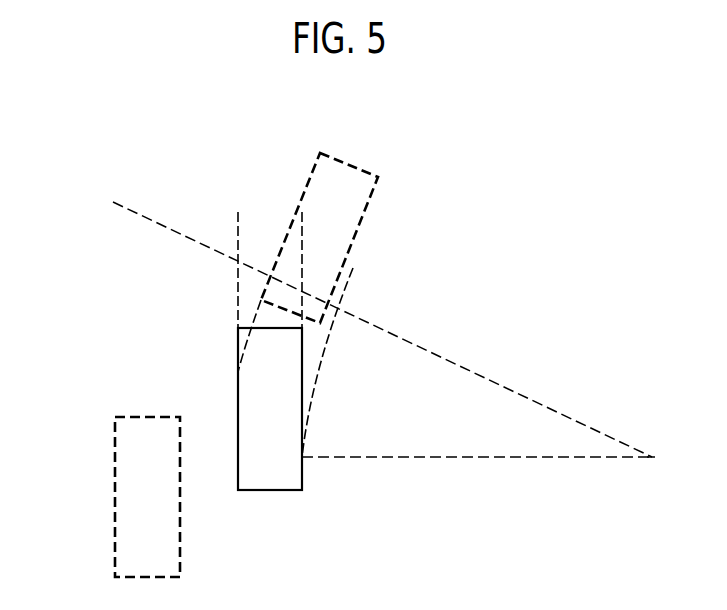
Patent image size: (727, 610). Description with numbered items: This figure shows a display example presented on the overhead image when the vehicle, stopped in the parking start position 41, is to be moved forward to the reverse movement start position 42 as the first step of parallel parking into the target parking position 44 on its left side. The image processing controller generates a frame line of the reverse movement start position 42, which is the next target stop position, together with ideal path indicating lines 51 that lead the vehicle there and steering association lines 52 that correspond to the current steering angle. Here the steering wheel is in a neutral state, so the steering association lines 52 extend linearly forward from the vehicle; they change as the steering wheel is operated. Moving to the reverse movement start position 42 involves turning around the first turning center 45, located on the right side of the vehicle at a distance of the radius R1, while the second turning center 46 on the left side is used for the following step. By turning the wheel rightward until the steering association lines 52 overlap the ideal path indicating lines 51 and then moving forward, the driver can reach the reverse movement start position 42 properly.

The parking start position 41 is at (262, 480).
The reverse movement start position 42 is at (375, 173).
The target parking position 44 is at (127, 487).
The first turning center 45 is at (653, 457).
The second turning center 46 is at (113, 202).
The ideal path indicating lines 51 is at (247, 362).
The steering association lines 52 is at (302, 293).
The radius R1 is at (477, 477).